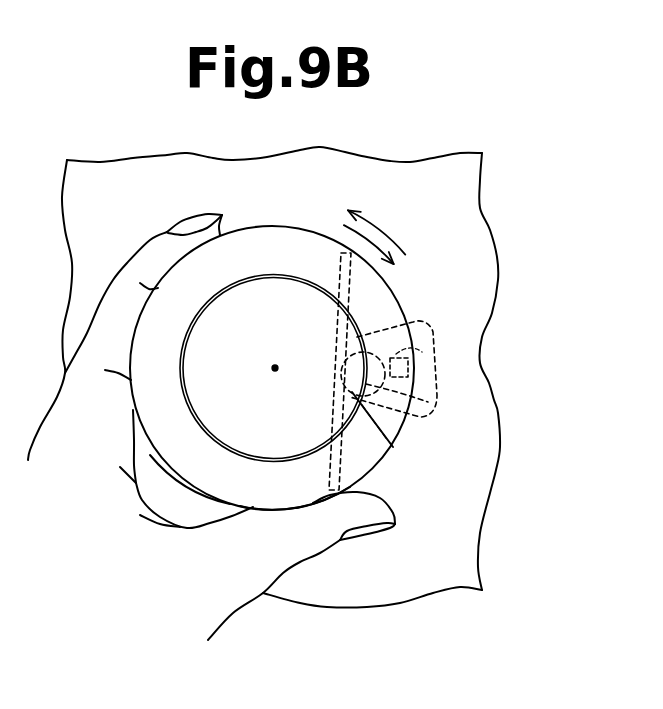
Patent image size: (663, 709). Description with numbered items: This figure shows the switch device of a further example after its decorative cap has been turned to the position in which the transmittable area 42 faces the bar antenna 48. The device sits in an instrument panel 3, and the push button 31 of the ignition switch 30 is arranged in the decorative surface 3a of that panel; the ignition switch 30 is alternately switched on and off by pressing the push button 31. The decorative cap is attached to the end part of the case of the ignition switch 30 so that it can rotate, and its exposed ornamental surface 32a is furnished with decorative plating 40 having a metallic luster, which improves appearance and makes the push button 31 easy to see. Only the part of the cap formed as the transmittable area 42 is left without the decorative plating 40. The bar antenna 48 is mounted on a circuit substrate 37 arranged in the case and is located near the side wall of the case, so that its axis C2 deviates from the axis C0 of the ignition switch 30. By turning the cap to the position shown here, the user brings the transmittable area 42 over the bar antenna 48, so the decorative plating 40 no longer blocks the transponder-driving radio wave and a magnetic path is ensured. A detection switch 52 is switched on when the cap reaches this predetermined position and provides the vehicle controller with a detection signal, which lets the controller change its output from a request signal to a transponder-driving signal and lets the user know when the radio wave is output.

The instrument panel 3 is at (423, 140).
The decorative surface 3a is at (480, 208).
The ignition switch 30 is at (250, 227).
The push button 31 is at (290, 452).
The ornamental surface 32a is at (218, 490).
The circuit substrate 37 is at (335, 333).
The decorative plating 40 is at (305, 498).
The transmittable area 42 is at (410, 368).
The bar antenna 48 is at (418, 417).
The detection switch 52 is at (429, 326).
The axis of the ignition switch C0 is at (273, 376).
The axis of the bar antenna C2 is at (395, 452).